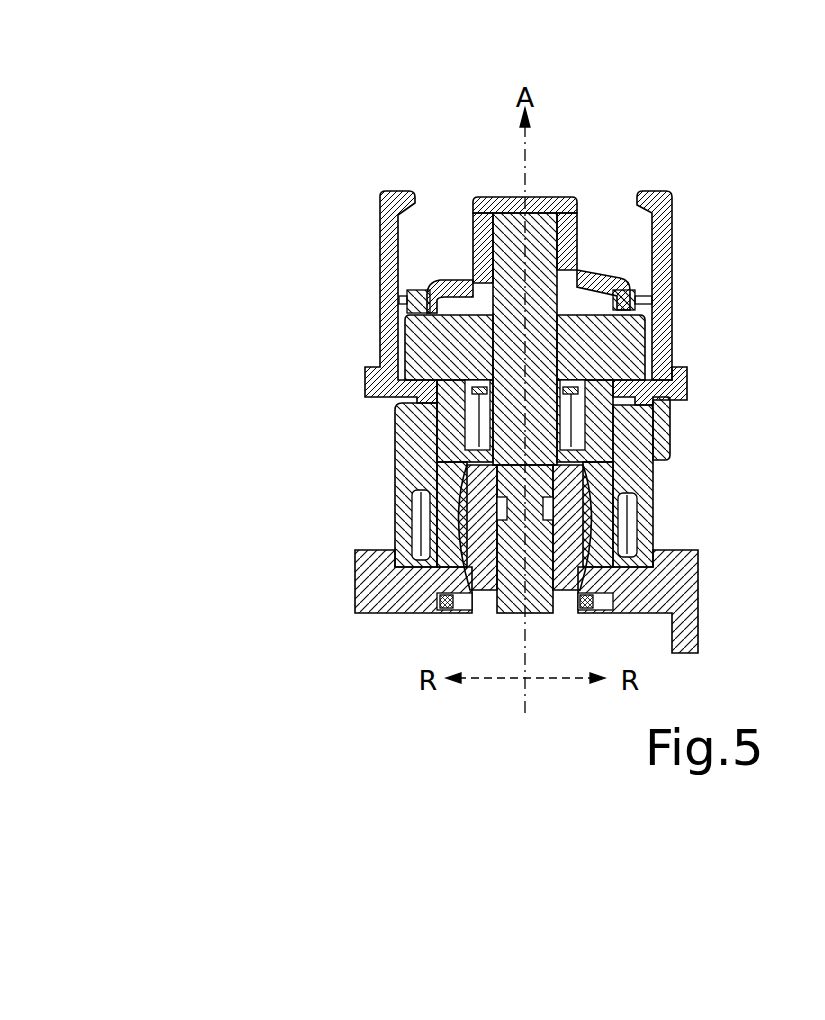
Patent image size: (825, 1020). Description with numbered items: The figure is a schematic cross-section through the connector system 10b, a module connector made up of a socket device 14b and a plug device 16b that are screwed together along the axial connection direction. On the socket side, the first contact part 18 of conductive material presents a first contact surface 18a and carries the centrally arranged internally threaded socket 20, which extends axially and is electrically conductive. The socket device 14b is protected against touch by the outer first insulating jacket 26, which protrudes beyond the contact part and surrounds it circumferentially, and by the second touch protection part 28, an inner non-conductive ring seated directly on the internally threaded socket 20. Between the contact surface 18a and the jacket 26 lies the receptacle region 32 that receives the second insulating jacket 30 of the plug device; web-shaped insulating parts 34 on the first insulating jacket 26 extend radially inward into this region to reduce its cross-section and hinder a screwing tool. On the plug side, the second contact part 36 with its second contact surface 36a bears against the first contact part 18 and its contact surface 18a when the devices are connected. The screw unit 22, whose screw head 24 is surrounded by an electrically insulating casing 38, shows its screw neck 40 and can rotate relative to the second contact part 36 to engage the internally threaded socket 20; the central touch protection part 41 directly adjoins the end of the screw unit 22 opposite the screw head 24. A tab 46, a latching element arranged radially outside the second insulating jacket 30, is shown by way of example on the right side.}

The connector system 10b is at (248, 165).
The socket device 14b is at (680, 490).
The plug device 16b is at (684, 187).
The first contact part 18 is at (400, 530).
The first contact surface 18a is at (450, 611).
The internally threaded socket 20 is at (616, 540).
The screw unit 22 is at (502, 205).
The screw head 24 is at (553, 197).
The first insulating jacket 26 is at (398, 478).
The second touch protection part 28 is at (649, 365).
The second insulating jacket 30 is at (386, 262).
The receptacle region 32 is at (420, 503).
The insulating part 34 is at (398, 436).
The second contact part 36 is at (426, 338).
The second contact surface 36a is at (463, 467).
The electrically insulating casing 38 is at (433, 283).
The screw neck 40 is at (584, 280).
The central touch protection part 41 is at (553, 614).
The tab 46 is at (670, 445).